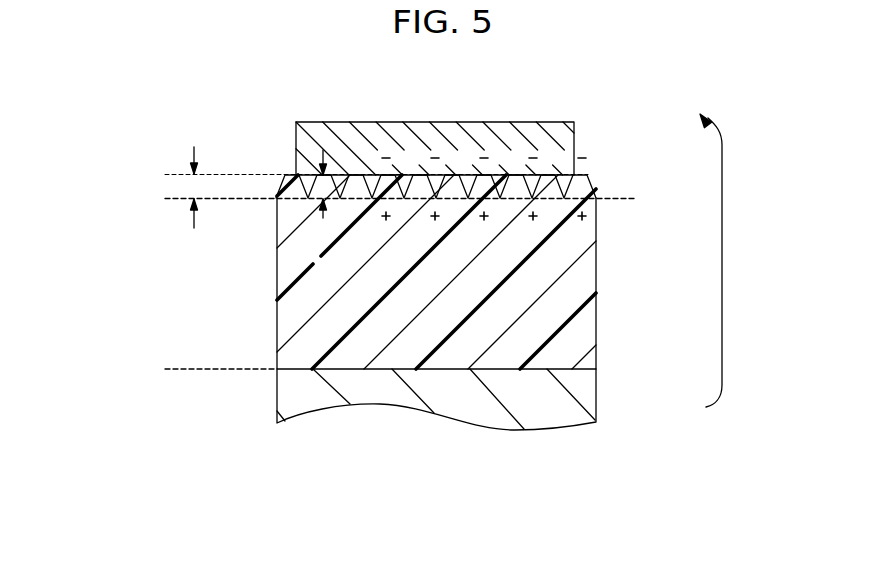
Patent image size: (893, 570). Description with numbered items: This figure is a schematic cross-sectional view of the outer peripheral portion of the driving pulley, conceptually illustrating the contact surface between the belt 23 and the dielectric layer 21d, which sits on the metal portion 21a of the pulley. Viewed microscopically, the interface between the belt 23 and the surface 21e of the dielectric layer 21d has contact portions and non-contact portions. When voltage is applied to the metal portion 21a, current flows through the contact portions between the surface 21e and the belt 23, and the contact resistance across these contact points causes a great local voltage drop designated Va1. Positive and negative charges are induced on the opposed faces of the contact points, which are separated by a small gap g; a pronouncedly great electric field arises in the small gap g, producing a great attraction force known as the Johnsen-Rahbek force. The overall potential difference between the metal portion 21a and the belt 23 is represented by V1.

The belt 23 is at (343, 128).
The surface of the dielectric layer 21e is at (589, 177).
The dielectric layer 21d is at (590, 286).
The metal portion 21a is at (308, 390).
The voltage drop Va1 is at (193, 190).
The small gap g is at (317, 190).
The potential difference V1 is at (729, 260).